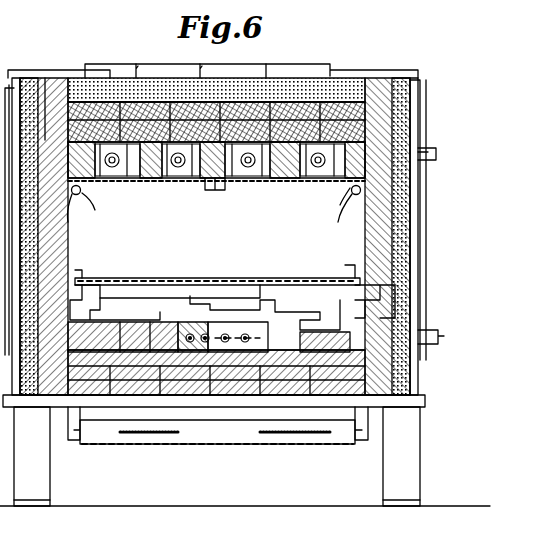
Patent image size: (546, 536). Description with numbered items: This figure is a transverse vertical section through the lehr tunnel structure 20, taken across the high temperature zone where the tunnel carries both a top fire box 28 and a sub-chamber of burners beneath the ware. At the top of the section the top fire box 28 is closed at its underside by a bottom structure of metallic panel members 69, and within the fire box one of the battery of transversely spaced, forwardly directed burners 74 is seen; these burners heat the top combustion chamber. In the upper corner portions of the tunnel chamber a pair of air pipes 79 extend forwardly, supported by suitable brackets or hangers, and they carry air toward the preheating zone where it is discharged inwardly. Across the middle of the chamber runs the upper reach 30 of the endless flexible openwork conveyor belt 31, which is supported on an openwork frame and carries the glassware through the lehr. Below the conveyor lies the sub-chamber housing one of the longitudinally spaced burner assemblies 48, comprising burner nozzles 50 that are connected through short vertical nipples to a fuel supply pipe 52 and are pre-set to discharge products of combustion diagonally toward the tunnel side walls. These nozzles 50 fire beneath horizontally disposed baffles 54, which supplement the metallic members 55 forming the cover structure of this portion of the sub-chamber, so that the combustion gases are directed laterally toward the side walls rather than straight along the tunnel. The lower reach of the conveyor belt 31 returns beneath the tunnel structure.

The lehr tunnel structure 20 is at (425, 237).
The top fire box 28 is at (45, 78).
The upper reach of conveyor belt 30 is at (287, 280).
The endless flexible openwork conveyor belt 31 is at (200, 446).
The burner assembly 48 is at (232, 330).
The burner nozzle 50 is at (205, 334).
The fuel supply pipe 52 is at (440, 340).
The baffle 54 is at (195, 332).
The metallic member 55 is at (120, 312).
The metallic panel member 69 is at (142, 180).
The burner 74 is at (245, 182).
The air pipe 79 is at (83, 194).